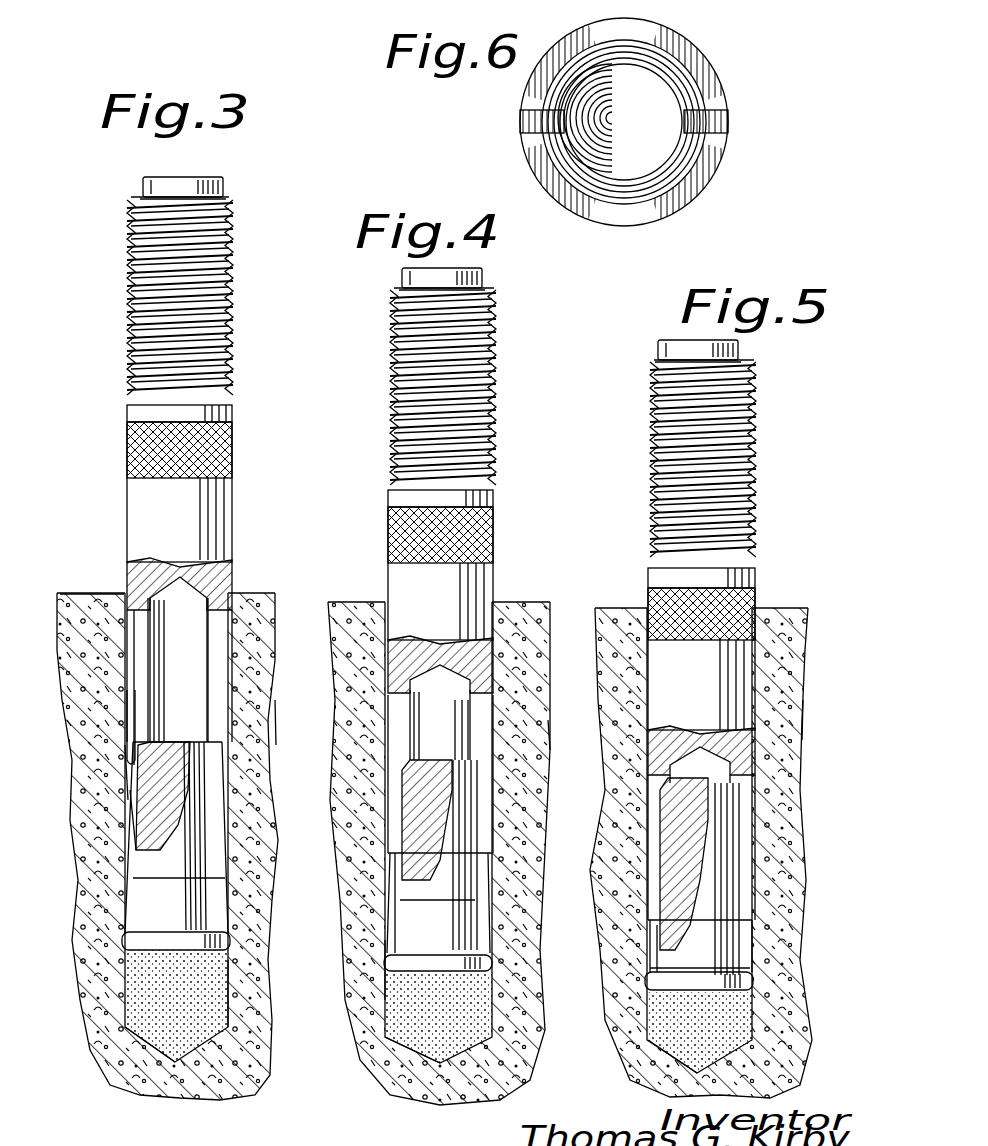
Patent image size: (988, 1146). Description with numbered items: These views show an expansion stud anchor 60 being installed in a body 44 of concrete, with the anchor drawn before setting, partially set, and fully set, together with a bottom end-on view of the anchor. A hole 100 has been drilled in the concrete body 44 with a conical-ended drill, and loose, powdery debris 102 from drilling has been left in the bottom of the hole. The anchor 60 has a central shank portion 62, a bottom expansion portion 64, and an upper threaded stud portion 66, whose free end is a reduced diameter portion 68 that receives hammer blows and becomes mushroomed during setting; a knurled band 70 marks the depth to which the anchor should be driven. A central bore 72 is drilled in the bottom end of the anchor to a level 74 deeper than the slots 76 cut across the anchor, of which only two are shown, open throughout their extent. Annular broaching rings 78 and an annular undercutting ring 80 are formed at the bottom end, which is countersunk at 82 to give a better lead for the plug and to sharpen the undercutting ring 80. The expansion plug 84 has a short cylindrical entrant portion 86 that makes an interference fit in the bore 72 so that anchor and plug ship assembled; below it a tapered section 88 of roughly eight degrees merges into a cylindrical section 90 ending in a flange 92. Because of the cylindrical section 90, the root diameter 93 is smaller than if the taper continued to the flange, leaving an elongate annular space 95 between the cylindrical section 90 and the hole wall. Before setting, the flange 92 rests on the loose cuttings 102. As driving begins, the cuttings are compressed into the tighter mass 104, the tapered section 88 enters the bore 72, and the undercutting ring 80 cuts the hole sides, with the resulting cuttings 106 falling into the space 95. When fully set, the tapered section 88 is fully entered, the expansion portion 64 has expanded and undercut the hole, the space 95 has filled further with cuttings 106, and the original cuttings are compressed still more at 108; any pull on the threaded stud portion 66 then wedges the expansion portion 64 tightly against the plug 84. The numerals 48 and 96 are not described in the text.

In FIG. 3, the body of concrete 44 is at (273, 745).
In FIG. 4, the body of concrete 44 is at (530, 748).
In FIG. 5, the body of concrete 44 is at (800, 724).
In FIG. 3, the concrete body 48 is at (265, 593).
In FIG. 4, the concrete body 48 is at (540, 603).
In FIG. 5, the concrete body 48 is at (790, 608).
In FIG. 3, the anchor 60 is at (168, 555).
In FIG. 3, the central shank portion 62 is at (222, 500).
In FIG. 4, the central shank portion 62 is at (485, 594).
In FIG. 5, the central shank portion 62 is at (745, 690).
In FIG. 3, the bottom expansion portion 64 is at (235, 645).
In FIG. 4, the bottom expansion portion 64 is at (500, 790).
In FIG. 5, the bottom expansion portion 64 is at (765, 845).
In FIG. 3, the upper threaded stud portion 66 is at (233, 332).
In FIG. 4, the upper threaded stud portion 66 is at (500, 368).
In FIG. 5, the upper threaded stud portion 66 is at (757, 435).
In FIG. 3, the reduced diameter portion 68 is at (215, 182).
In FIG. 4, the reduced diameter portion 68 is at (462, 280).
In FIG. 5, the reduced diameter portion 68 is at (745, 358).
In FIG. 3, the knurled band 70 is at (235, 452).
In FIG. 4, the knurled band 70 is at (495, 545).
In FIG. 5, the knurled band 70 is at (757, 576).
In FIG. 3, the central bore 72 is at (200, 605).
In FIG. 4, the central bore 72 is at (455, 716).
In FIG. 5, the central bore 72 is at (720, 776).
In FIG. 6, the central bore 72 is at (635, 175).
In FIG. 3, the level 74 is at (125, 592).
In FIG. 3, the slots 76 is at (130, 718).
In FIG. 6, the slots 76 is at (530, 133).
In FIG. 3, the annular broaching rings 78 is at (210, 700).
In FIG. 3, the annular undercutting ring 80 is at (232, 770).
In FIG. 4, the annular undercutting ring 80 is at (490, 840).
In FIG. 3, the countersunk end 82 is at (128, 788).
In FIG. 6, the countersunk end 82 is at (685, 160).
In FIG. 3, the expansion plug 84 is at (215, 848).
In FIG. 4, the expansion plug 84 is at (427, 820).
In FIG. 5, the expansion plug 84 is at (735, 900).
In FIG. 3, the cylindrical entrant portion 86 is at (205, 790).
In FIG. 3, the tapered section 88 is at (212, 862).
In FIG. 4, the tapered section 88 is at (470, 870).
In FIG. 5, the tapered section 88 is at (727, 879).
In FIG. 3, the cylindrical section 90 is at (210, 905).
In FIG. 5, the cylindrical section 90 is at (757, 976).
In FIG. 3, the flange 92 is at (135, 962).
In FIG. 4, the flange 92 is at (375, 977).
In FIG. 5, the flange 92 is at (760, 1005).
In FIG. 3, the root diameter 93 is at (122, 942).
In FIG. 4, the root diameter 93 is at (385, 946).
In FIG. 5, the root diameter 93 is at (645, 975).
In FIG. 4, the annular cylindrical space 95 is at (490, 918).
In FIG. 3, the retaining ring 96 is at (238, 942).
In FIG. 3, the hole 100 is at (213, 1007).
In FIG. 4, the hole 100 is at (478, 900).
In FIG. 3, the debris 102 is at (150, 1022).
In FIG. 4, the compressed cuttings 104 is at (410, 1045).
In FIG. 4, the cuttings 106 is at (480, 962).
In FIG. 5, the cuttings 106 is at (755, 952).
In FIG. 5, the further compressed cuttings 108 is at (660, 1042).